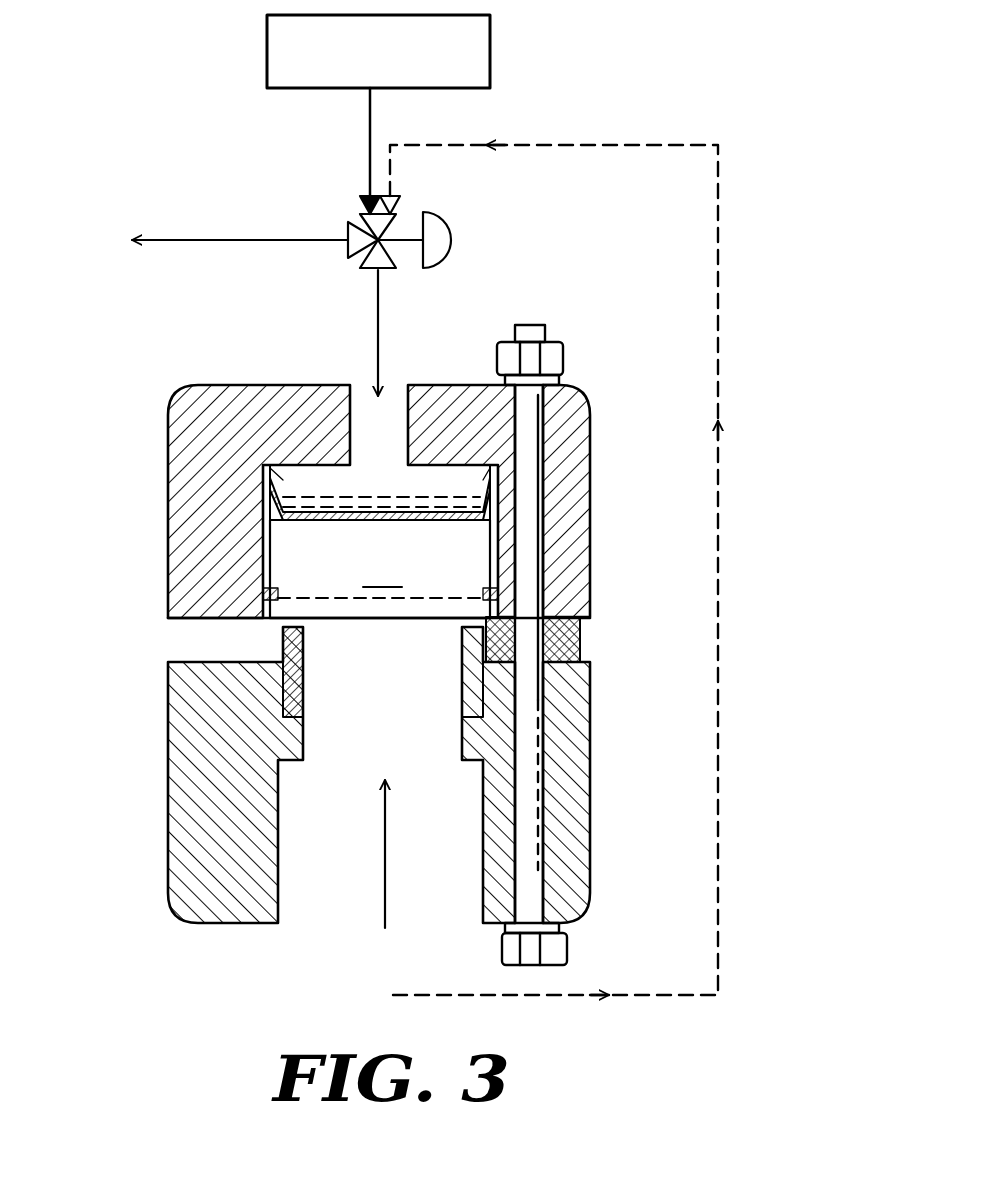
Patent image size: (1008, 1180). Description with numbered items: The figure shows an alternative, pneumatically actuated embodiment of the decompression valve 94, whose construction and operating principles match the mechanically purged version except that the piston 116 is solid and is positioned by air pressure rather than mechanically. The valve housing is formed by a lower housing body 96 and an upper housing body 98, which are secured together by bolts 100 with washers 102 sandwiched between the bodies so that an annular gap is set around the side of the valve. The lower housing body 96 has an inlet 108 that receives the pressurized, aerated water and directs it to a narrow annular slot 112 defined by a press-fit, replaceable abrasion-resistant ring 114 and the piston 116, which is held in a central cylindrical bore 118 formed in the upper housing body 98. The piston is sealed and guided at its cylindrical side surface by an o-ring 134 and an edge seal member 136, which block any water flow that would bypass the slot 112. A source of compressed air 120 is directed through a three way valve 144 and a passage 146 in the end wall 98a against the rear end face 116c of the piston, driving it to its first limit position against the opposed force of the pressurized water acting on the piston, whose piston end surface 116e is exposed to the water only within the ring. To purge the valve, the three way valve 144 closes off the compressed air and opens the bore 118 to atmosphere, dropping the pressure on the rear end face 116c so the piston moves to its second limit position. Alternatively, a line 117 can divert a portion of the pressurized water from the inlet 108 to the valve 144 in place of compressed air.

The compressed air source 120 is at (490, 37).
The three way valve 144 is at (400, 218).
The line 117 is at (718, 270).
The passage 146 is at (396, 372).
The upper housing body 98 is at (196, 519).
The end wall 98a is at (452, 385).
The piston 116 is at (292, 554).
The central cylindrical bore 118 is at (275, 468).
The rear end face 116c is at (388, 507).
The edge seal member 136 is at (462, 507).
The o-ring 134 is at (268, 594).
The piston end surface 116e is at (382, 620).
The inlet 108 is at (300, 824).
The narrow annular slot 112 is at (305, 629).
The ring 114 is at (300, 694).
The lower housing body 96 is at (580, 744).
The washer 102 is at (582, 656).
The bolt 100 is at (535, 832).
The decompression valve 94 is at (495, 292).